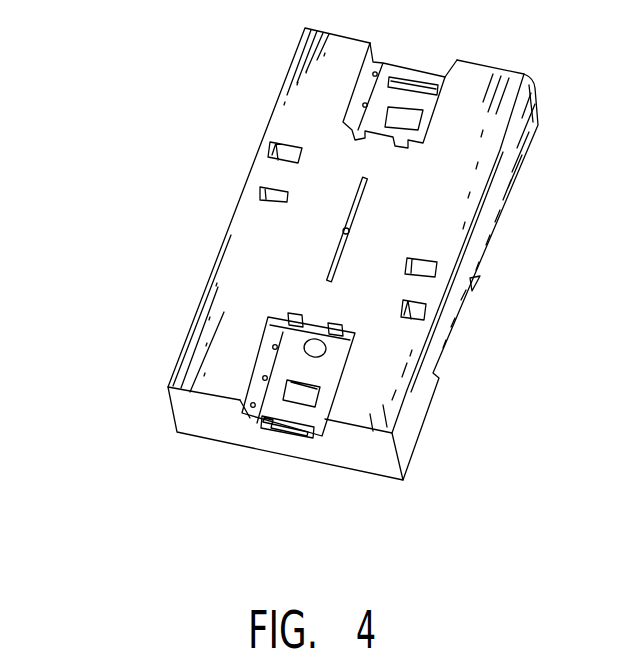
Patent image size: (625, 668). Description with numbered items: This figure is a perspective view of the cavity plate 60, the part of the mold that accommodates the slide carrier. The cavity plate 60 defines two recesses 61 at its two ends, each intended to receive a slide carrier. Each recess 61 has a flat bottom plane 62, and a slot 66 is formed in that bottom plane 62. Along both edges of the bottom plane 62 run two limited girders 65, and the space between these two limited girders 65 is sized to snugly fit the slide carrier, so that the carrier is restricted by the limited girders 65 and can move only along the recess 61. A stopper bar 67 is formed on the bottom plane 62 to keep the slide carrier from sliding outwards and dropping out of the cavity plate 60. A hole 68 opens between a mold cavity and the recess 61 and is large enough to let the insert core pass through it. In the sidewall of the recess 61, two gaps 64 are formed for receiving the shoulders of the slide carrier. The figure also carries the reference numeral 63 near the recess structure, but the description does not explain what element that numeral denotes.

The cavity plate 60 is at (92, 50).
The recess 61 is at (293, 424).
The bottom plane 62 is at (287, 412).
The bracket 63 is at (265, 325).
The gap 64 is at (293, 322).
The limited girder 65 is at (245, 394).
The slot 66 is at (303, 400).
The stopper bar 67 is at (250, 420).
The hole 68 is at (305, 351).